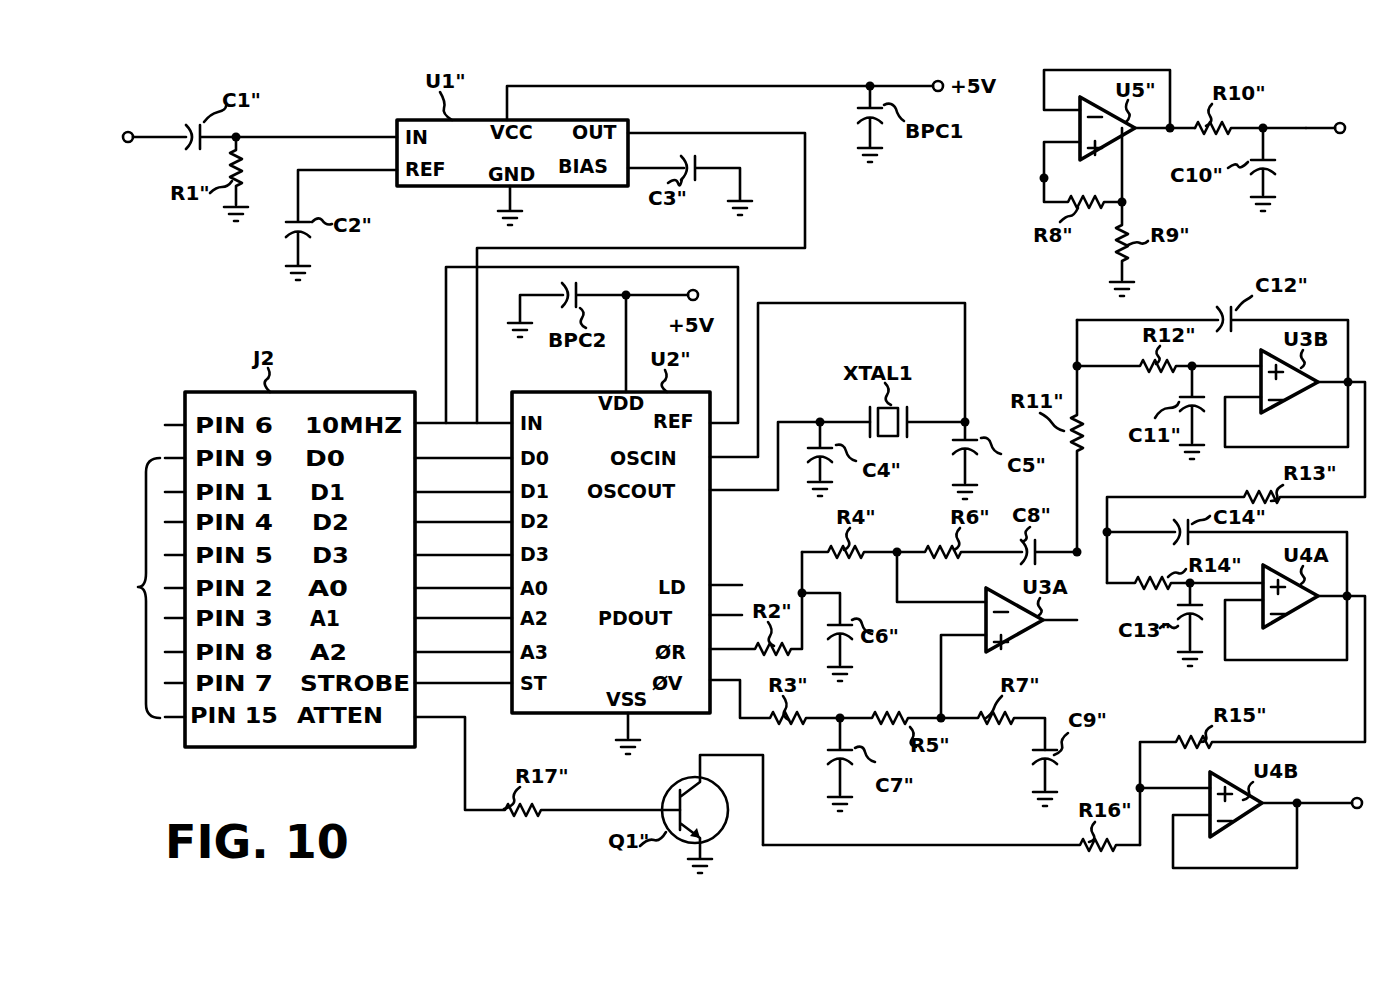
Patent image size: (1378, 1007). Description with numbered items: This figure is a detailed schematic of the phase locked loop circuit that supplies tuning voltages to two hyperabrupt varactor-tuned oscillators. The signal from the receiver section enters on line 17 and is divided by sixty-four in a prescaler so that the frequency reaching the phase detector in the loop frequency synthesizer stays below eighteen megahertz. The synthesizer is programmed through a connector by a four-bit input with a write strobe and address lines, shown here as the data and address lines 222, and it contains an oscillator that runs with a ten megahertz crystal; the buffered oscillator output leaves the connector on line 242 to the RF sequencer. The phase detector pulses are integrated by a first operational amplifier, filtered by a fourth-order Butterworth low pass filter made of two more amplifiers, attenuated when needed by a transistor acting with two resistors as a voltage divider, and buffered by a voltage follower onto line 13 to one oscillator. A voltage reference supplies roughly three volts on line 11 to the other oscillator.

The line 17 is at (182, 132).
The line 11 is at (1310, 134).
The line 13 is at (1312, 826).
The line 242 is at (177, 425).
The data and address bus lines 222 is at (138, 587).